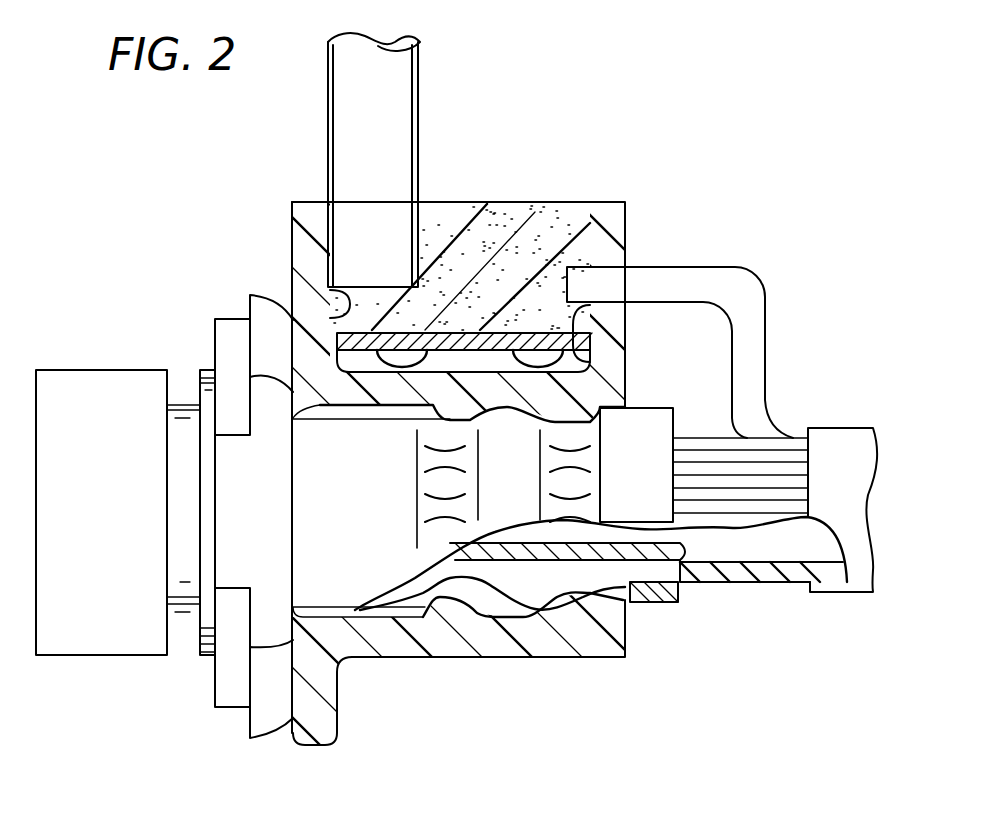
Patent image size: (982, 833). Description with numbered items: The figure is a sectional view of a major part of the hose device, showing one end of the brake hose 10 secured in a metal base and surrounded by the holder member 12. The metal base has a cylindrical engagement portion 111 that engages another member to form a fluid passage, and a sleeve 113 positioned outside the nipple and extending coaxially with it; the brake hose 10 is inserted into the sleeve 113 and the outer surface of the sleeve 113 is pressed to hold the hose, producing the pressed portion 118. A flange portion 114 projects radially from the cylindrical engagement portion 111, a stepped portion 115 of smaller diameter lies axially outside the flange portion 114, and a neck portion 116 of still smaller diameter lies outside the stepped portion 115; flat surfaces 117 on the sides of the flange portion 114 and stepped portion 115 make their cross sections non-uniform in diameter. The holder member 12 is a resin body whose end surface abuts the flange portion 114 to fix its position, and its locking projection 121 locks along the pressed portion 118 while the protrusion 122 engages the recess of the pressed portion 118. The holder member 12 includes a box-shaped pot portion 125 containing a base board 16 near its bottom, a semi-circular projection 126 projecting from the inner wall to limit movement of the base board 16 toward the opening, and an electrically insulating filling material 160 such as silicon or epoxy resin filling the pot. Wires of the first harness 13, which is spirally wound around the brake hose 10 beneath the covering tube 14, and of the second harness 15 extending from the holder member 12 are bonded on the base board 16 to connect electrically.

The brake hose 10 is at (795, 438).
The holder member 12 is at (480, 648).
The first harness 13 is at (747, 273).
The tube 14 is at (850, 517).
The second harness 15 is at (400, 89).
The base board 16 is at (475, 345).
The cylindrical engagement portion 111 is at (100, 364).
The sleeve 113 is at (660, 462).
The flange portion 114 is at (270, 710).
The stepped portion 115 is at (230, 688).
The neck portion 116 is at (178, 655).
The flat surfaces 117 is at (170, 318).
The pressed portion 118 is at (457, 468).
The locking projection 121 is at (453, 607).
The protrusion 122 is at (700, 560).
The box-shaped pot portion 125 is at (627, 227).
The semi-circular projection 126 is at (340, 303).
The filling material 160 is at (460, 213).